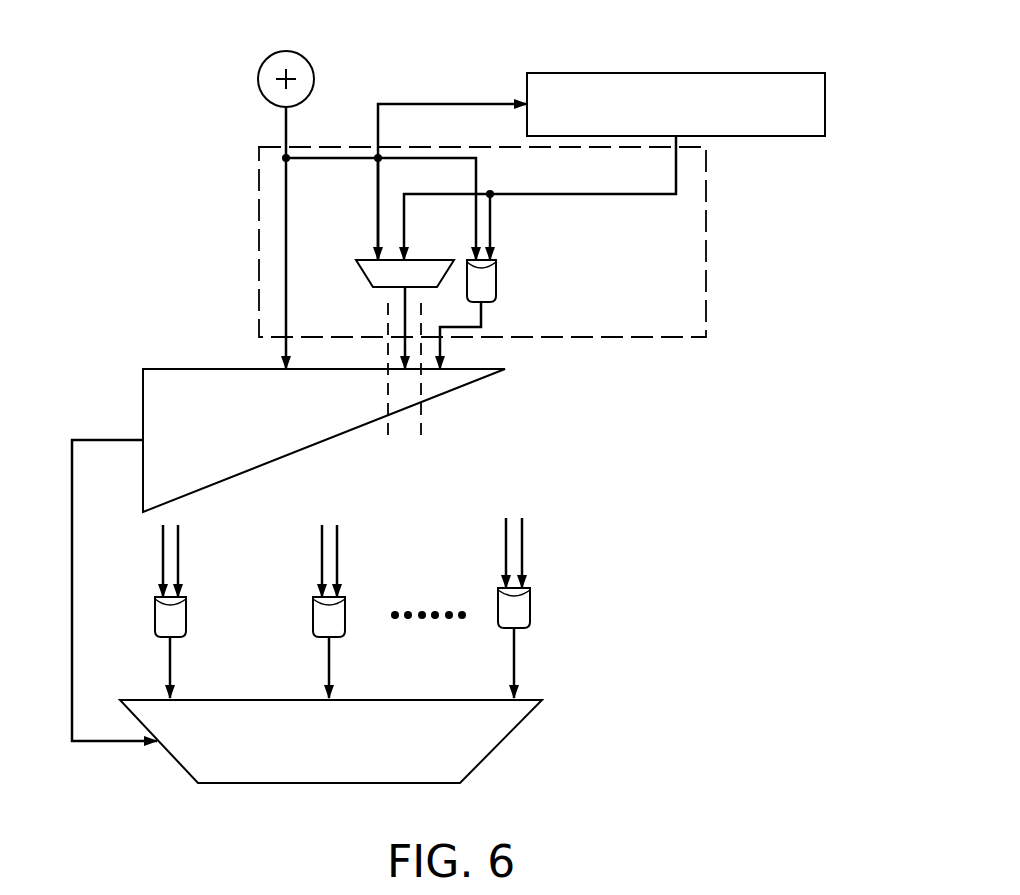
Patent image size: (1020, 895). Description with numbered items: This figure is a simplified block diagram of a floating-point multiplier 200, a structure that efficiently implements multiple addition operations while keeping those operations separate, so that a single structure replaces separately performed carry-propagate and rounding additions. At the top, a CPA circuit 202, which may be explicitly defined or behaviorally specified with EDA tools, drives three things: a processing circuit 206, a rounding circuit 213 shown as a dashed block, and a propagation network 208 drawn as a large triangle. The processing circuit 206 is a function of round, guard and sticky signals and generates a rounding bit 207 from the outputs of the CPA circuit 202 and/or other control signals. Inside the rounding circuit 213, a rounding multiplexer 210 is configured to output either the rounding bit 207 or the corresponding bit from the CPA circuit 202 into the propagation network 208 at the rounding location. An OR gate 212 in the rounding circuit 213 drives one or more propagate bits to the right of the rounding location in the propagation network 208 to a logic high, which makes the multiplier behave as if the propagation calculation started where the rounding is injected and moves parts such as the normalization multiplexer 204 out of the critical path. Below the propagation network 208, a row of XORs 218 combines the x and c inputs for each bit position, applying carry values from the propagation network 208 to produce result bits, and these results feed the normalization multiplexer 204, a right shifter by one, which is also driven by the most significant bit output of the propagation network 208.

The floating-point multiplier 200 is at (129, 46).
The CPA circuit 202 is at (307, 62).
The normalization multiplexer 204 is at (497, 748).
The processing circuit 206 is at (738, 73).
The rounding bit 207 is at (598, 195).
The propagation network 208 is at (288, 522).
The rounding multiplexer 210 is at (363, 275).
The OR gate 212 is at (496, 268).
The rounding circuit 213 is at (706, 258).
The XORs 218 is at (330, 607).